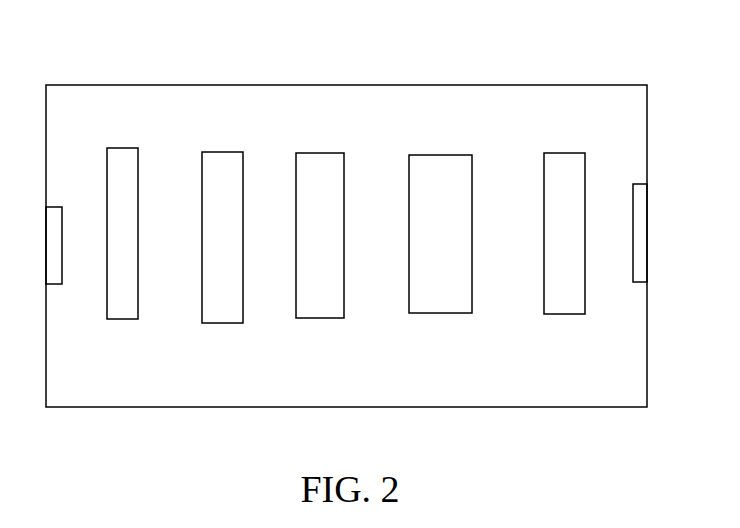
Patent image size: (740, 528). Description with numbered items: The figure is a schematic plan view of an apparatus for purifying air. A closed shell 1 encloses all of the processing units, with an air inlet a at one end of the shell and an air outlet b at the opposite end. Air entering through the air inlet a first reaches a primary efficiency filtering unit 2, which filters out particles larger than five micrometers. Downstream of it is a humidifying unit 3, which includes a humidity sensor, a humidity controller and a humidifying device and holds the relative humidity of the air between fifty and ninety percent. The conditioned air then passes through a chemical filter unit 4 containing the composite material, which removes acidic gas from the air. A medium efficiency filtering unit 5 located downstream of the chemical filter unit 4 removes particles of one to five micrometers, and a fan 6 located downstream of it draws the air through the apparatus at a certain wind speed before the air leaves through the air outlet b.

The closed shell 1 is at (346, 214).
The primary efficiency filtering unit 2 is at (122, 233).
The humidifying unit 3 is at (222, 237).
The chemical filter unit 4 is at (320, 235).
The medium efficiency filtering unit 5 is at (440, 234).
The fan 6 is at (564, 233).
The air inlet a is at (52, 207).
The air outlet b is at (633, 183).